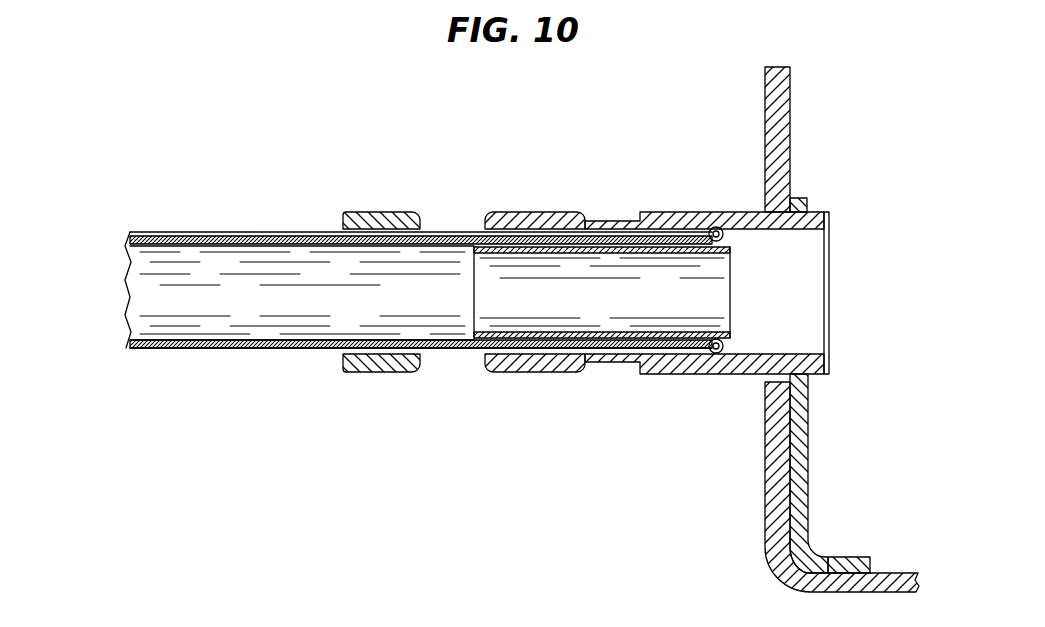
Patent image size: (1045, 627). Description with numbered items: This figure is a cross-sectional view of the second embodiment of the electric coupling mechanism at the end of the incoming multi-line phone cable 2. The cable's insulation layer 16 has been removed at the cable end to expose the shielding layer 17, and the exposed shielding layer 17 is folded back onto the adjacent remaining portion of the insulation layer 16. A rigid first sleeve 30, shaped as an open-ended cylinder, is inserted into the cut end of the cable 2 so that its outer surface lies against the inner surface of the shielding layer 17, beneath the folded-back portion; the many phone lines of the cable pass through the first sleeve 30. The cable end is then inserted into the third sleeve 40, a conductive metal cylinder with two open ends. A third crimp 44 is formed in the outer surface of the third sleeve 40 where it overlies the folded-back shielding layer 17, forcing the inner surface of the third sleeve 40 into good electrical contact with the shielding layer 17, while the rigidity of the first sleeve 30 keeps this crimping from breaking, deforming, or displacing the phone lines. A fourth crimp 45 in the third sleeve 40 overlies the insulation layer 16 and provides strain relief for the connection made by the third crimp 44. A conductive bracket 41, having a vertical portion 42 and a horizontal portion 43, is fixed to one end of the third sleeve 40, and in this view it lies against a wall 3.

The incoming multi-line phone cable 2 is at (192, 212).
The wall 3 is at (790, 116).
The insulation layer 16 is at (245, 231).
The shielding layer 17 is at (266, 246).
The first sleeve 30 is at (728, 254).
The third sleeve 40 is at (724, 212).
The bracket 41 is at (858, 385).
The vertical portion 42 is at (810, 402).
The horizontal portion 43 is at (866, 553).
The third crimp 44 is at (606, 212).
The fourth crimp 45 is at (447, 230).